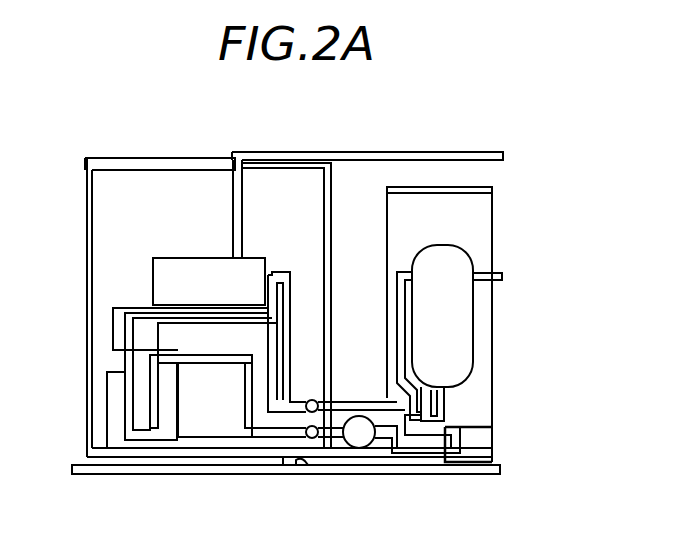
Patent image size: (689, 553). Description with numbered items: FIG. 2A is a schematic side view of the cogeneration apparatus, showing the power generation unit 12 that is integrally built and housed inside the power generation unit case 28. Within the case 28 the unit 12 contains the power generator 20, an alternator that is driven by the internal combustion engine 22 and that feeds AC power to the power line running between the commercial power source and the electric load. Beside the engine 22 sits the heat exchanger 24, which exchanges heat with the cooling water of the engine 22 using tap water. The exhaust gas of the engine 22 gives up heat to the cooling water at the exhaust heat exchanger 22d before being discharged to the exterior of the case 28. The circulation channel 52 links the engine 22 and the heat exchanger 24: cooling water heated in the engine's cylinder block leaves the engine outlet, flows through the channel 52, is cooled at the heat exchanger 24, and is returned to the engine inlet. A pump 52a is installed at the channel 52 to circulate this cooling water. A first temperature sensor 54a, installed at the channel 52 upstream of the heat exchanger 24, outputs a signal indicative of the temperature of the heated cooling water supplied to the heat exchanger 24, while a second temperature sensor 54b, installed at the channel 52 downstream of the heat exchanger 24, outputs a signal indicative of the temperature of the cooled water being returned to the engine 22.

The power generation unit 12 is at (157, 149).
The power generation unit case 28 is at (86, 196).
The power generator 20 is at (198, 258).
The internal combustion engine 22 is at (210, 437).
The exhaust heat exchanger 22d is at (115, 420).
The heat exchanger 24 is at (430, 395).
The circulation channel 52 is at (370, 446).
The pump 52a is at (320, 402).
The first temperature sensor 54a is at (320, 432).
The second temperature sensor 54b is at (312, 438).